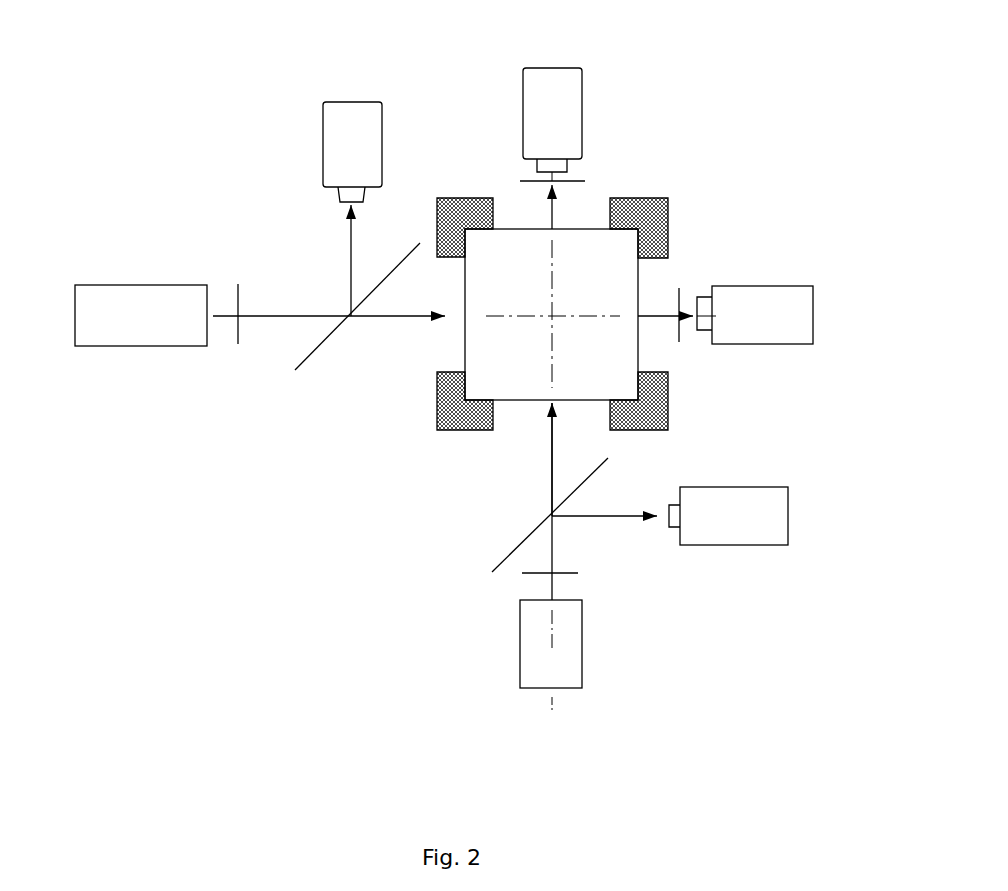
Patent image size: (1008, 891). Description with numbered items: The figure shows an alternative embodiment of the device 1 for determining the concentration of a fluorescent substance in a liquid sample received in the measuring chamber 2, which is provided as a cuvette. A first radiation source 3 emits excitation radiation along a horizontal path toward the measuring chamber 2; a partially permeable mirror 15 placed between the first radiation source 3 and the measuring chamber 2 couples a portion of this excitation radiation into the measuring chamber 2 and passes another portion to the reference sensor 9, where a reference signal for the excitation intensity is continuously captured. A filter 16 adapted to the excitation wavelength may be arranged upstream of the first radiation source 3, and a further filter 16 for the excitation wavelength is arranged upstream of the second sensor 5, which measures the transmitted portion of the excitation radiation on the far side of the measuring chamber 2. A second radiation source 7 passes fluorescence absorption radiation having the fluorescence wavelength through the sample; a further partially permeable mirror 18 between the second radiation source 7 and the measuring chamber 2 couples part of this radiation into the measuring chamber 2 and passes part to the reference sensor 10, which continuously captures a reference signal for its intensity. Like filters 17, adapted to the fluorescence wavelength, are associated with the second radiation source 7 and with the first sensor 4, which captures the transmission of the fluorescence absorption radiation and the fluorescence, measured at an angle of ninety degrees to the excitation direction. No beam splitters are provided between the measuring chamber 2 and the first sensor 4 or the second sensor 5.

The device 1 is at (447, 82).
The measuring chamber 2 is at (443, 345).
The first radiation source 3 is at (135, 365).
The first sensor 4 is at (598, 87).
The second sensor 5 is at (755, 353).
The second radiation source 7 is at (498, 672).
The reference sensor 9 is at (307, 157).
The reference sensor 10 is at (742, 557).
The partially permeable mirror 15 is at (313, 353).
The filter 16 is at (237, 330).
The filter 17 is at (575, 175).
The partially permeable mirror 18 is at (527, 535).